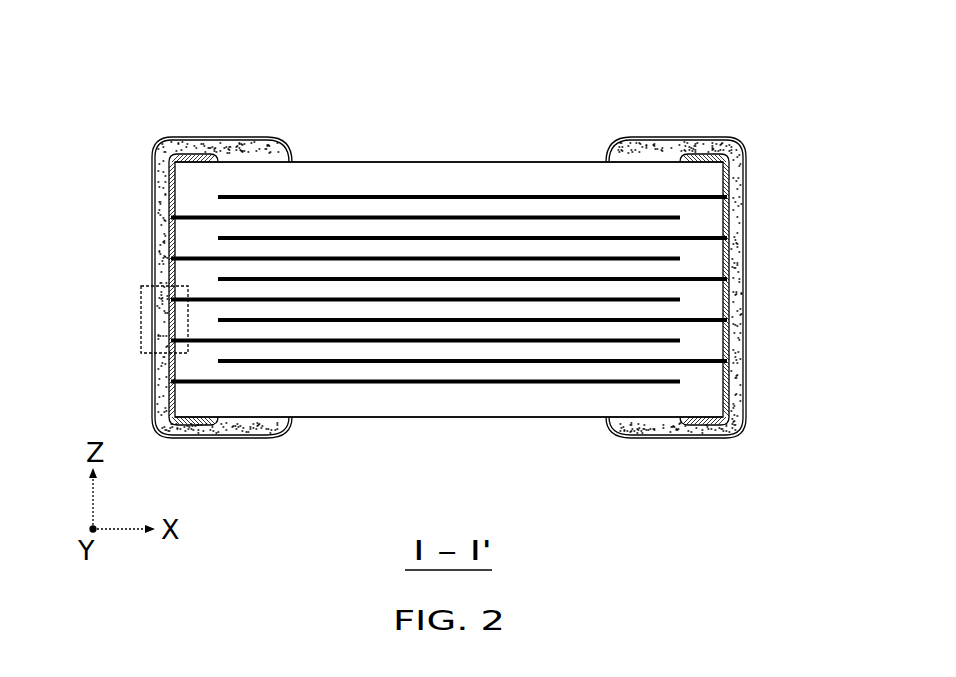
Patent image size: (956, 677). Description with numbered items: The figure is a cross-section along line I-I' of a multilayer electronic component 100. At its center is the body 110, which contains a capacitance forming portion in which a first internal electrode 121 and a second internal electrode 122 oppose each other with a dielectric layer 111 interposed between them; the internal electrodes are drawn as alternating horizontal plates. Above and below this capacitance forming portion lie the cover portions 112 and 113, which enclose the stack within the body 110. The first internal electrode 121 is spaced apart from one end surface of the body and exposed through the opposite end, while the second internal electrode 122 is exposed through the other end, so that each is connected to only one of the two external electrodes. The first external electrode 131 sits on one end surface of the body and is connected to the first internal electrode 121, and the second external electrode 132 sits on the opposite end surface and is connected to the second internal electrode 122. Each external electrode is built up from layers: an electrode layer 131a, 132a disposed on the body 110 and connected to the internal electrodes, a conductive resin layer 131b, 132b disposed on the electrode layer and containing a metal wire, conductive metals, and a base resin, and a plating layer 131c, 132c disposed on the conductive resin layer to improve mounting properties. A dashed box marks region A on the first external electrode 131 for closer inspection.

The multilayer electronic component 100 is at (472, 43).
The body 110 is at (543, 162).
The dielectric layer 111 is at (427, 205).
The cover portion 112 is at (483, 175).
The cover portion 113 is at (487, 403).
The first internal electrode 121 is at (372, 212).
The second internal electrode 122 is at (311, 193).
The first external electrode 131 is at (152, 287).
The electrode layer 131a is at (169, 187).
The conductive resin layer 131b is at (160, 230).
The plating layer 131c is at (63, 183).
The second external electrode 132 is at (745, 287).
The electrode layer 132a is at (730, 185).
The conductive resin layer 132b is at (737, 230).
The plating layer 132c is at (746, 270).
The enlarged region A is at (141, 325).